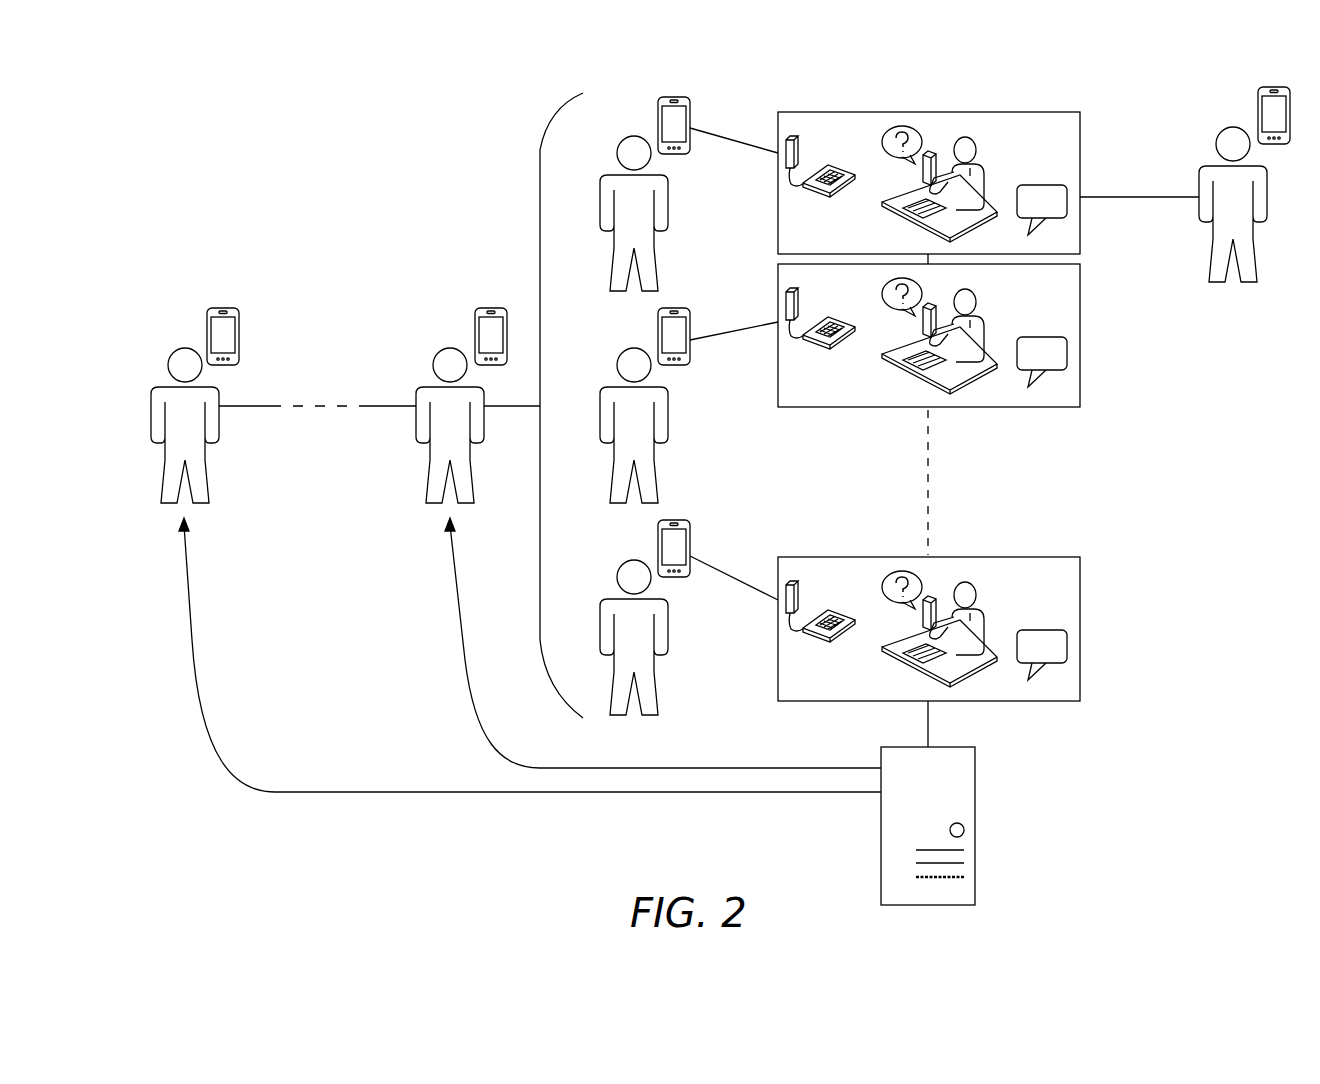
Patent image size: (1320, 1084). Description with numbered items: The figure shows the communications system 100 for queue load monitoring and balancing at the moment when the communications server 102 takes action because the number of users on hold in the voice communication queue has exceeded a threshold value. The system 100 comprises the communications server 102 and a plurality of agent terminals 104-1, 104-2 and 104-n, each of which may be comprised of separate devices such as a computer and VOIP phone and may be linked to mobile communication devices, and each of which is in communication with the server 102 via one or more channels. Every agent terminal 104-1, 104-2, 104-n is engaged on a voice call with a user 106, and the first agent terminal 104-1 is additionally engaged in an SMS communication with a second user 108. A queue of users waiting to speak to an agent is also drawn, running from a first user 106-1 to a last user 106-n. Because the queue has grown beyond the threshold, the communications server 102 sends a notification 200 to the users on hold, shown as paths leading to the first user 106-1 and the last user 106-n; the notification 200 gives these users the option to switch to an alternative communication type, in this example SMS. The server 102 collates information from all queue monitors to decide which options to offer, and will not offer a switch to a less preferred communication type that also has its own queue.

The communications system 100 is at (303, 826).
The communications server 102 is at (977, 757).
The first agent terminal 104-1 is at (1080, 122).
The agent terminal 104-2 is at (1080, 392).
The last agent terminal 104-n is at (1080, 568).
The user 106 is at (635, 136).
The first user 106-1 is at (447, 350).
The last user 106-n is at (177, 350).
The second user 108 is at (1233, 127).
The notification 200 is at (190, 636).